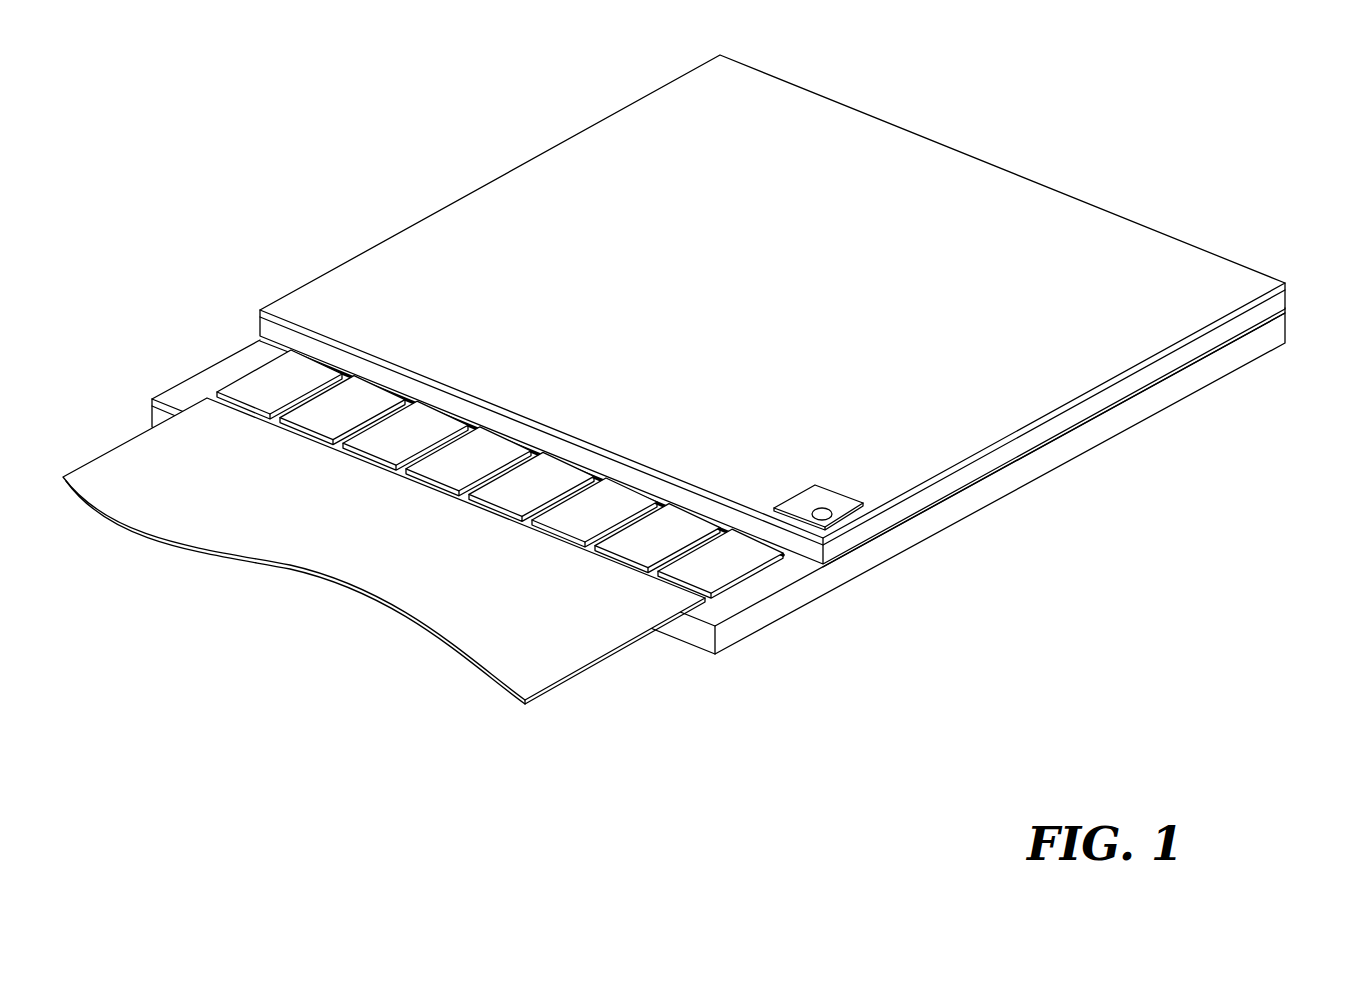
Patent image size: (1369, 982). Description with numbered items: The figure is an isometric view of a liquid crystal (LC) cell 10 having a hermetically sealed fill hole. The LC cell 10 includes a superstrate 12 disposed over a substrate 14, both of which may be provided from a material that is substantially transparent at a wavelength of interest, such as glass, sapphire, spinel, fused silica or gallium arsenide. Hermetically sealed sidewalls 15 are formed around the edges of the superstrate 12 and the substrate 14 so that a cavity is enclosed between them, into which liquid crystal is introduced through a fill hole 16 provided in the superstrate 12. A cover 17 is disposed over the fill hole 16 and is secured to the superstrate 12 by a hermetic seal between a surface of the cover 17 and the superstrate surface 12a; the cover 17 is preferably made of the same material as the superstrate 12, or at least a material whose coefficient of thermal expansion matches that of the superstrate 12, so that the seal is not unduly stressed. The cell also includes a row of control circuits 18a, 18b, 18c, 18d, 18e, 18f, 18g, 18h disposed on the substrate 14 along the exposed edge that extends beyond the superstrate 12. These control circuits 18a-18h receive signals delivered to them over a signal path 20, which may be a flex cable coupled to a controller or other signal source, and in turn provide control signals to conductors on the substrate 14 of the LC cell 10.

The liquid crystal cell 10 is at (500, 114).
The superstrate 12 is at (1277, 302).
The superstrate surface 12a is at (1087, 301).
The substrate 14 is at (202, 385).
The sidewalls 15 is at (258, 340).
The fill hole 16 is at (824, 508).
The cover 17 is at (795, 492).
The control circuit 18a is at (262, 390).
The control circuit 18b is at (325, 416).
The control circuit 18c is at (388, 441).
The control circuit 18d is at (451, 467).
The control circuit 18e is at (514, 492).
The control circuit 18f is at (579, 518).
The control circuit 18g is at (640, 544).
The control circuit 18h is at (703, 569).
The signal path 20 is at (511, 645).